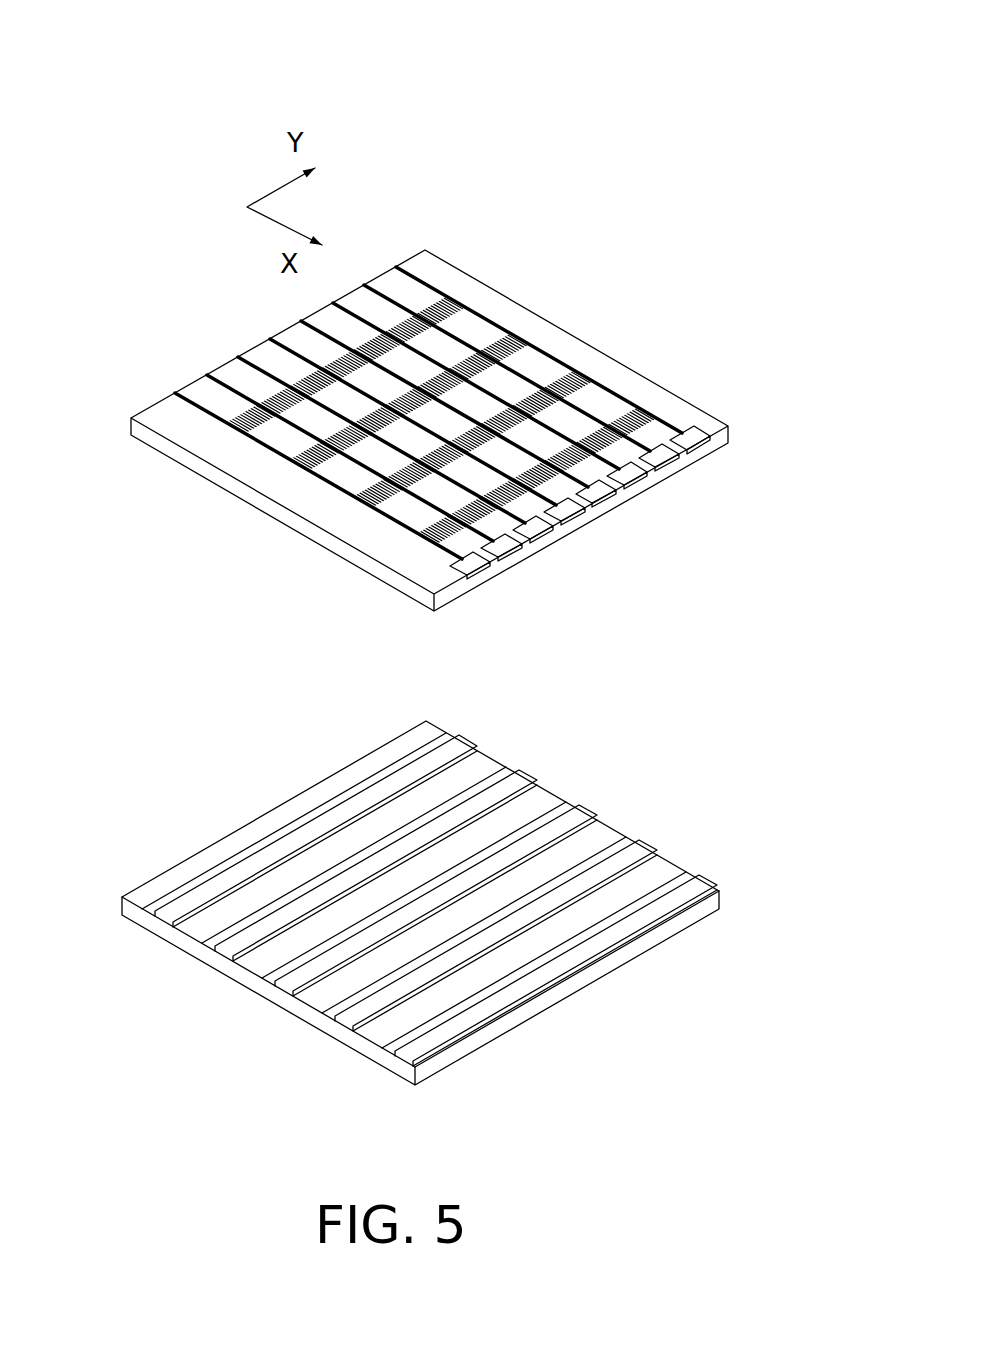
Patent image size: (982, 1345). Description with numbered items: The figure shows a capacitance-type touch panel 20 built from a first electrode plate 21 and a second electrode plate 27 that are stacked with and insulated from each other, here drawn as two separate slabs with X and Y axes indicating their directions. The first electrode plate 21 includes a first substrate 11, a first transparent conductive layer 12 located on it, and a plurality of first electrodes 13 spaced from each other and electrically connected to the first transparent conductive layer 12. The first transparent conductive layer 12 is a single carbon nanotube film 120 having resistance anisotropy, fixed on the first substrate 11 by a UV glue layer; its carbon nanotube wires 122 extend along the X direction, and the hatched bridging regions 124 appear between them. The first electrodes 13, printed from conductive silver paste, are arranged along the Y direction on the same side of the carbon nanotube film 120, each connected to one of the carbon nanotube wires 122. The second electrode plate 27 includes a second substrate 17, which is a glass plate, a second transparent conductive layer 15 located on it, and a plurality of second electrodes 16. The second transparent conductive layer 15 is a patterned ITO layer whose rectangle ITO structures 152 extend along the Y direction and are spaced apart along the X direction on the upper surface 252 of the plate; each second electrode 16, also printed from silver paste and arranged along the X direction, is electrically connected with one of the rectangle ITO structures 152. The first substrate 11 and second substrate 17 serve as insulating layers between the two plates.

The capacitance-type touch panel 20 is at (396, 36).
The first electrode plate 21 is at (641, 362).
The first substrate 11 is at (510, 563).
The carbon nanotube film 120 is at (163, 282).
The first transparent conductive layer 12 is at (276, 461).
The carbon nanotube wires 122 is at (263, 370).
The conductive hatched strip 124 is at (245, 417).
The first electrodes 13 is at (697, 437).
The second transparent conductive layer 15 is at (267, 685).
The second electrode plate 27 is at (719, 862).
The top surface of second substrate 252 is at (568, 928).
The second substrate 17 is at (540, 1002).
The rectangle ITO structures 152 is at (397, 843).
The second electrodes 16 is at (282, 980).